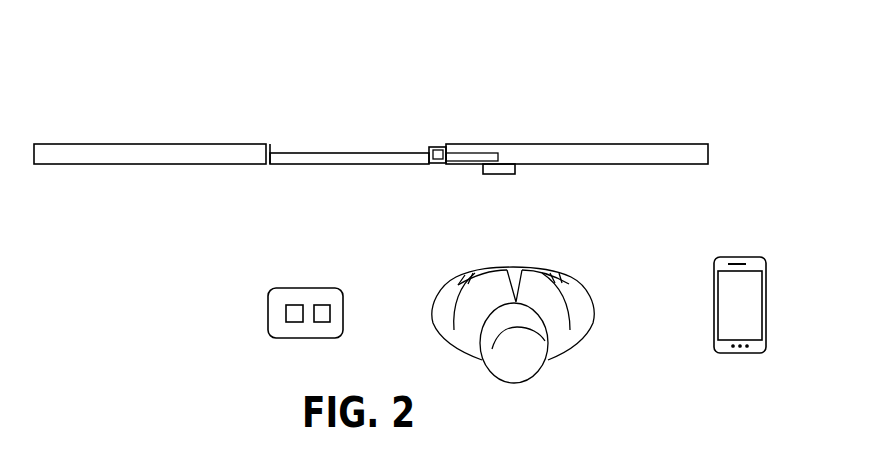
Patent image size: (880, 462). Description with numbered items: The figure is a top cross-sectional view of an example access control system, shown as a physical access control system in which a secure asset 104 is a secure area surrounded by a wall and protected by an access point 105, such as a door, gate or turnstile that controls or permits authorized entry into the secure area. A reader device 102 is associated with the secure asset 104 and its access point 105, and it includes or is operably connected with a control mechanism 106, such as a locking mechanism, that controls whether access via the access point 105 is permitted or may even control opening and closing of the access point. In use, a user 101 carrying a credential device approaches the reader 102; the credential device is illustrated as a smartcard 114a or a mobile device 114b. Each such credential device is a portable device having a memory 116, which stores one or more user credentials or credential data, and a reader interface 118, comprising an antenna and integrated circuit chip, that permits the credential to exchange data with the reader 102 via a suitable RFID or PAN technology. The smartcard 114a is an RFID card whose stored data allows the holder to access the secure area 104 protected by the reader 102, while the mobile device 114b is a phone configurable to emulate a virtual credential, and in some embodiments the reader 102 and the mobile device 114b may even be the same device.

The secure asset 104 is at (334, 38).
The access point 105 is at (352, 165).
The control mechanism 106 is at (437, 147).
The reader device 102 is at (502, 175).
The smartcard 114a is at (268, 318).
The memory 116 is at (295, 320).
The reader interface 118 is at (328, 311).
The user 101 is at (568, 282).
The mobile device 114b is at (714, 308).